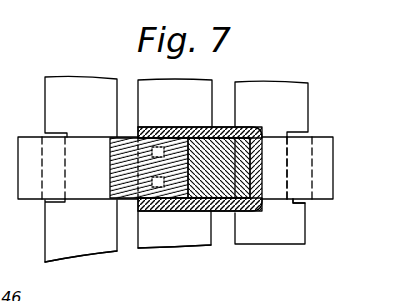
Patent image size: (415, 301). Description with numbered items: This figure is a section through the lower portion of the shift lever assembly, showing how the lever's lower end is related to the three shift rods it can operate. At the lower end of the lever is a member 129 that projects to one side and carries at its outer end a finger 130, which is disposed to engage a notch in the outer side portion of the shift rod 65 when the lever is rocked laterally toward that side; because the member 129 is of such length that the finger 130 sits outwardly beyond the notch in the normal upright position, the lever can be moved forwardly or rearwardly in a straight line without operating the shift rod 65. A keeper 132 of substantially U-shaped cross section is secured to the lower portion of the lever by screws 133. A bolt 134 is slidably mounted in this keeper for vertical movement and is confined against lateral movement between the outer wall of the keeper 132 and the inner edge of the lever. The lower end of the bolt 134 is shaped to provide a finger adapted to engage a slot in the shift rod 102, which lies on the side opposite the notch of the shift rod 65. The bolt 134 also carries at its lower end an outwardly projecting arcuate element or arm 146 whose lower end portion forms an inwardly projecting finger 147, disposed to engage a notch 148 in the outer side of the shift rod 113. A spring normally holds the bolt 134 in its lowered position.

The shift rod 65 is at (93, 247).
The shift rod 102 is at (165, 248).
The shift rod 113 is at (267, 238).
The member 129 is at (87, 192).
The finger 130 is at (28, 193).
The keeper 132 is at (284, 116).
The screws 133 is at (188, 107).
The bolt 134 is at (220, 192).
The arcuate element or arm 146 is at (325, 192).
The finger 147 is at (306, 143).
The notch 148 is at (297, 204).